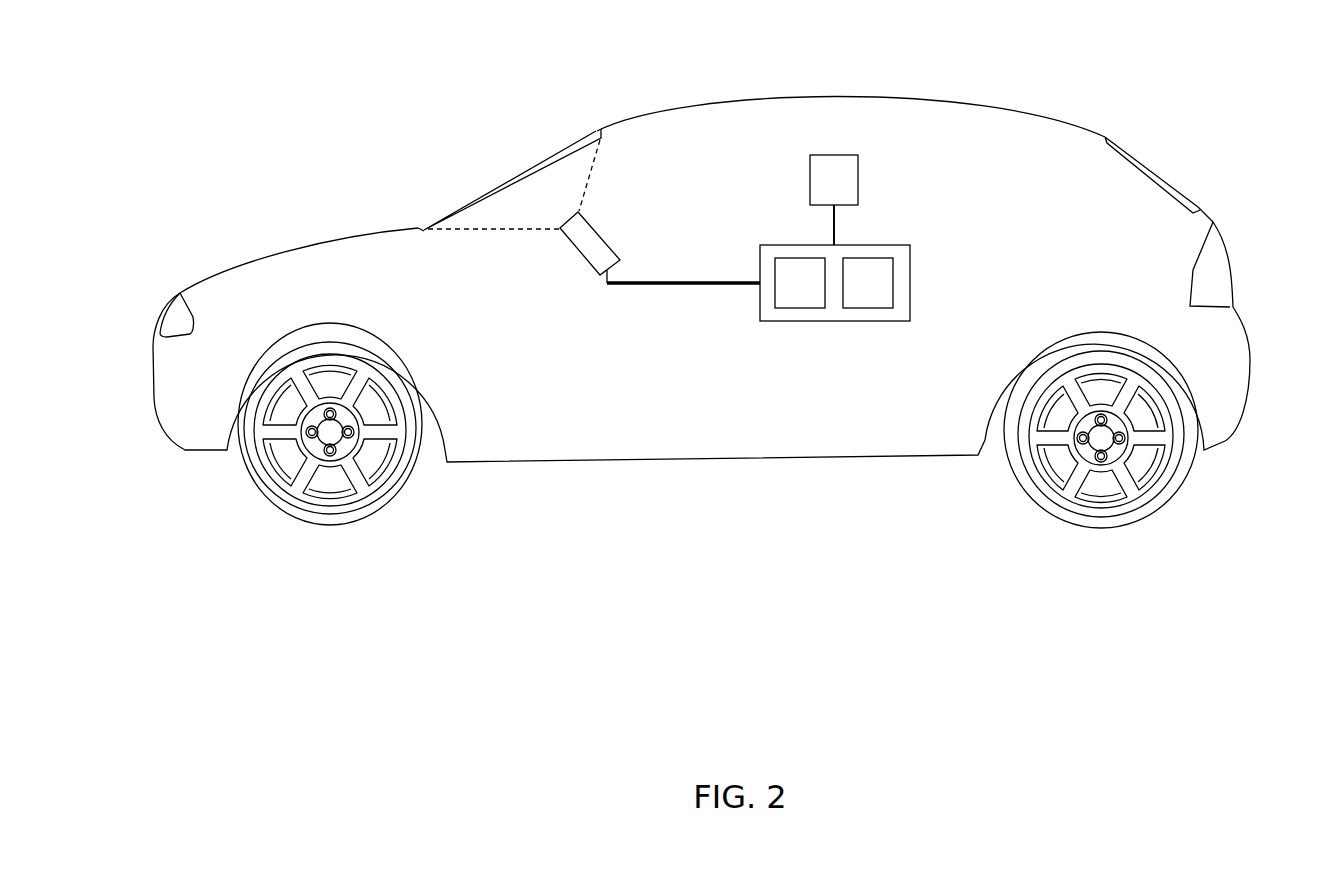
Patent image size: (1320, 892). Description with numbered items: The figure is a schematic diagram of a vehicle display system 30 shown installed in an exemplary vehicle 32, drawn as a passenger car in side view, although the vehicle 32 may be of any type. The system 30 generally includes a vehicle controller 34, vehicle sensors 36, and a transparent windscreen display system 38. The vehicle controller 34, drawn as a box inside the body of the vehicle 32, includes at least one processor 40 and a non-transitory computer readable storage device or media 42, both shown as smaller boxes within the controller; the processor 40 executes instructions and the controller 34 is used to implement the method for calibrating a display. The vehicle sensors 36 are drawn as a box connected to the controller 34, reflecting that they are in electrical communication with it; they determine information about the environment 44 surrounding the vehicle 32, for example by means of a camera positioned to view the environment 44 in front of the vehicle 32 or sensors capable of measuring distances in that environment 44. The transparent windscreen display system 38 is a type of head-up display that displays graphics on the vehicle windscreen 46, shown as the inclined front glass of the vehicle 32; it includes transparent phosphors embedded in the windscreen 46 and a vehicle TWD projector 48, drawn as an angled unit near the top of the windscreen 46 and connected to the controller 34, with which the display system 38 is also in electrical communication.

The vehicle display system 30 is at (468, 176).
The vehicle 32 is at (1022, 108).
The vehicle controller 34 is at (910, 318).
The vehicle sensors 36 is at (820, 192).
The transparent windscreen display (TWD) system 38 is at (633, 186).
The processor 40 is at (786, 295).
The non-transitory computer readable storage device or media 42 is at (854, 295).
The environment 44 is at (262, 138).
The vehicle windscreen 46 is at (550, 162).
The vehicle TWD projector 48 is at (577, 257).